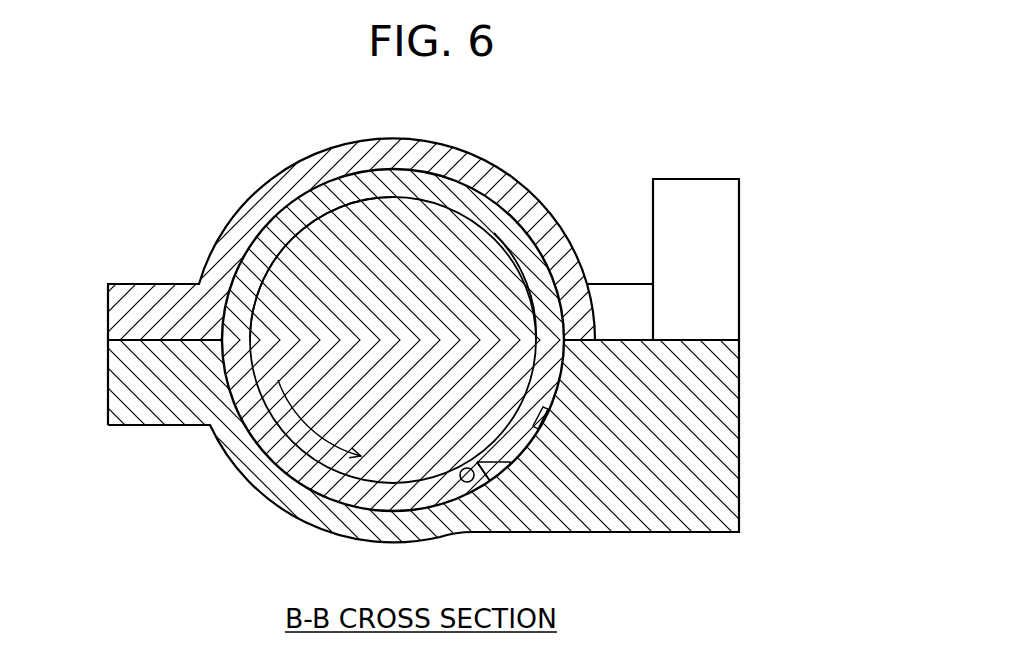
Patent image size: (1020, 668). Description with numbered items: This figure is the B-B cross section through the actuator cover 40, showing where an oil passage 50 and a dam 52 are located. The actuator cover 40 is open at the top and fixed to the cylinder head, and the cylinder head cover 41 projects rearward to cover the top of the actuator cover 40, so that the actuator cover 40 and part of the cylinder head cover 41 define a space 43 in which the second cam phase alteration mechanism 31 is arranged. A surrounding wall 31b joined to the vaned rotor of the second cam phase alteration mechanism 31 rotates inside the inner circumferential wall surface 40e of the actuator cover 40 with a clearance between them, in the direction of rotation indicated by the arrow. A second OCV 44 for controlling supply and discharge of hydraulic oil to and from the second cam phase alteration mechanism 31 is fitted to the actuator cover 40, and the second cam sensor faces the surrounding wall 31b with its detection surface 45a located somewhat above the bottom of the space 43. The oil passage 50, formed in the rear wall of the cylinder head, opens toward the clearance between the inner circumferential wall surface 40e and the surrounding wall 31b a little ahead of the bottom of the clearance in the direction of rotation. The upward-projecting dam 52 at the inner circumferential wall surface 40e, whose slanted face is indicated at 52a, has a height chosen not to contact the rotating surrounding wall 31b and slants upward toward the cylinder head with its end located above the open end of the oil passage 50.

The second cam phase alteration mechanism 31 is at (468, 258).
The surrounding wall 31b is at (523, 272).
The actuator cover 40 is at (515, 538).
The inner circumferential wall surface 40e is at (560, 362).
The cylinder head cover 41 is at (505, 163).
The space 43 is at (262, 257).
The second OCV 44 is at (708, 179).
The detection surface 45a is at (537, 412).
The oil passage 50 is at (458, 472).
The dam 52 is at (499, 459).
The stopper inclined surface 52a is at (483, 466).